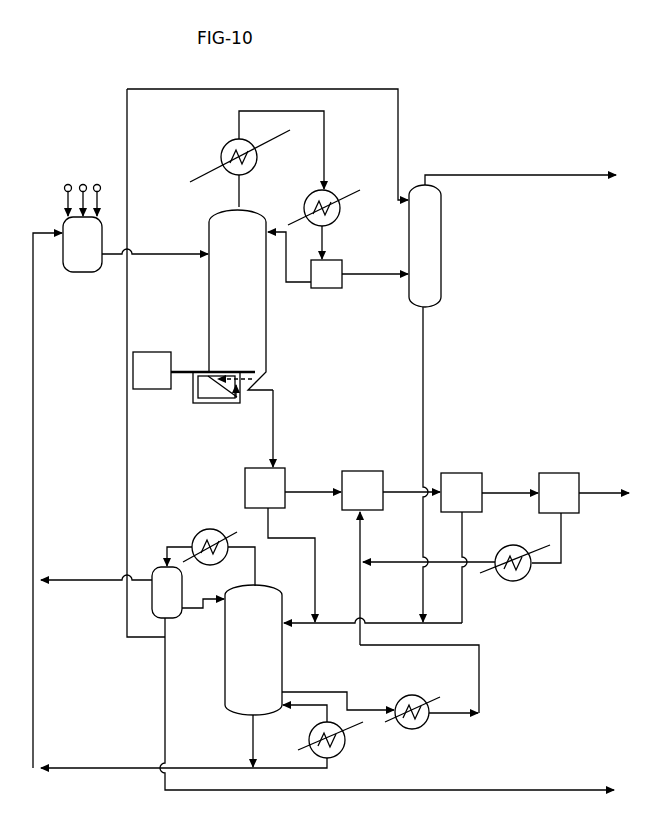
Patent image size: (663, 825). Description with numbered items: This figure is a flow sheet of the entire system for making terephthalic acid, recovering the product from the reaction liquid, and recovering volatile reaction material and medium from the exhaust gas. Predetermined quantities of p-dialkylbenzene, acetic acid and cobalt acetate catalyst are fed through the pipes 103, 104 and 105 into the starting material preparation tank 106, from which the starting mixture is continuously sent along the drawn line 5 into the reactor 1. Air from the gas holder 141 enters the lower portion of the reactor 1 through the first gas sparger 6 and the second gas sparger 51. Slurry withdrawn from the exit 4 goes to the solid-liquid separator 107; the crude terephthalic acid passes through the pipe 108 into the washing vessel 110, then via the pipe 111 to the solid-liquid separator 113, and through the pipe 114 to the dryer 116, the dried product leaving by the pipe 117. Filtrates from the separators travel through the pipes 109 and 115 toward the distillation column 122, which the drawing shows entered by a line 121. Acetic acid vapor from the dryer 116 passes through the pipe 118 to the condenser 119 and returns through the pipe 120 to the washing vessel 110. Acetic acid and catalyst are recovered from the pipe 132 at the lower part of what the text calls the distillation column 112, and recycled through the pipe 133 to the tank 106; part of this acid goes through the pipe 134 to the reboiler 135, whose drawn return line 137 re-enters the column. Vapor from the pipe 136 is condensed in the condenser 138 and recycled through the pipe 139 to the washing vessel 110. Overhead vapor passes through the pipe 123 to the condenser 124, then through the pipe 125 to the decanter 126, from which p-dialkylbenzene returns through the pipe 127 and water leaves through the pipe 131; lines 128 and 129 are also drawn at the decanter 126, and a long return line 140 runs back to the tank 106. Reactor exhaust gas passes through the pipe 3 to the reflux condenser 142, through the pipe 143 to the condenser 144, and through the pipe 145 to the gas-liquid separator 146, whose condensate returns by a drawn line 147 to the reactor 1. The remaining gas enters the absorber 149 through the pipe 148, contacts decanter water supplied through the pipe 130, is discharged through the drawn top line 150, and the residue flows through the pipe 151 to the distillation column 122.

The reactor 1 is at (241, 300).
The pipe 3 is at (247, 191).
The exit 4 is at (269, 419).
The feed line 5 is at (155, 244).
The first gas sparger 6 is at (222, 399).
The second gas sparger 51 is at (213, 362).
The pipe 103 is at (63, 190).
The pipe 104 is at (86, 179).
The pipe 105 is at (111, 190).
The starting material preparation tank 106 is at (82, 244).
The solid-liquid separator 107 is at (265, 488).
The pipe 108 is at (313, 482).
The pipe 109 is at (309, 565).
The washing vessel 110 is at (362, 490).
The pipe 111 is at (411, 482).
The distillation column 112 is at (405, 612).
The solid-liquid separator 113 is at (461, 492).
The pipe 114 is at (510, 484).
The pipe 115 is at (479, 567).
The dryer 116 is at (559, 493).
The pipe 117 is at (604, 484).
The pipe 118 is at (564, 538).
The condenser 119 is at (515, 575).
The pipe 120 is at (429, 572).
The feed line to column 122 121 is at (373, 611).
The distillation column 122 is at (253, 650).
The pipe 123 is at (259, 566).
The condenser 124 is at (210, 536).
The pipe 125 is at (174, 545).
The decanter 126 is at (184, 592).
The pipe 127 is at (98, 570).
The reflux line 128 is at (203, 613).
The line 129 is at (182, 632).
The pipe 130 is at (146, 363).
The pipe 131 is at (387, 715).
The pipe 132 is at (271, 741).
The pipe 133 is at (184, 773).
The pipe 134 is at (278, 778).
The reboiler 135 is at (338, 740).
The pipe 136 is at (338, 700).
The reboiler return line 137 is at (306, 716).
The condenser 138 is at (412, 700).
The pipe 139 is at (453, 705).
The recycle line 140 is at (51, 500).
The gas holder 141 is at (152, 370).
The reflux condenser 142 is at (257, 157).
The pipe 143 is at (256, 149).
The condenser 144 is at (306, 168).
The pipe 145 is at (341, 243).
The gas-liquid separator 146 is at (328, 274).
The reflux line 147 is at (291, 269).
The pipe 148 is at (375, 265).
The absorber 149 is at (285, 198).
The overhead outlet line 150 is at (520, 169).
The pipe 151 is at (441, 464).